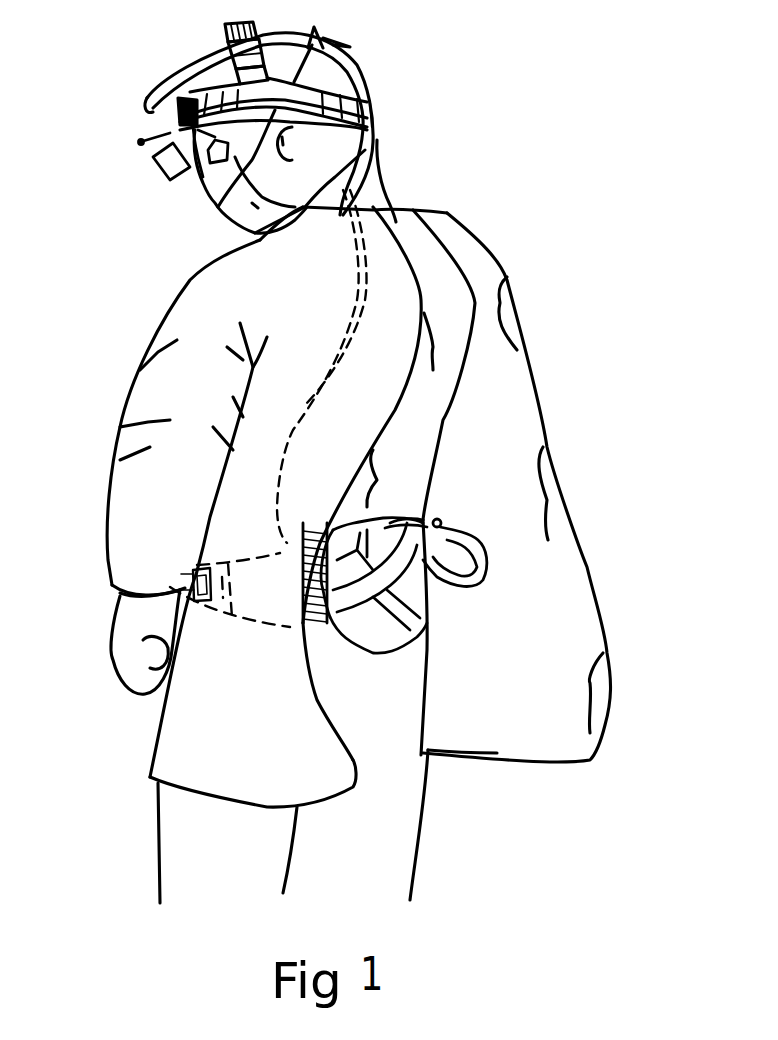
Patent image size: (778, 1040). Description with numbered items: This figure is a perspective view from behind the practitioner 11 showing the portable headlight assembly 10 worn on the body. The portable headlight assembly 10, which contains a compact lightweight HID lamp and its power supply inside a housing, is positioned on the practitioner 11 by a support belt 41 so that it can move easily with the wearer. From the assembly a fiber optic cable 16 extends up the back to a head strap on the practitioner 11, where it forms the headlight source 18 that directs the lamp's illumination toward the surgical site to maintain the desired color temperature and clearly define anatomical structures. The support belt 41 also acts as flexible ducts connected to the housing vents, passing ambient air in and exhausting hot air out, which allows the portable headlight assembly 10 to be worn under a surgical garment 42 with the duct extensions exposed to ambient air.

The portable headlight assembly 10 is at (462, 613).
The practitioner 11 is at (160, 90).
The fiber optic cable 16 is at (360, 73).
The headlight source 18 is at (430, 627).
The support belt 41 is at (317, 657).
The surgical garment 42 is at (527, 500).